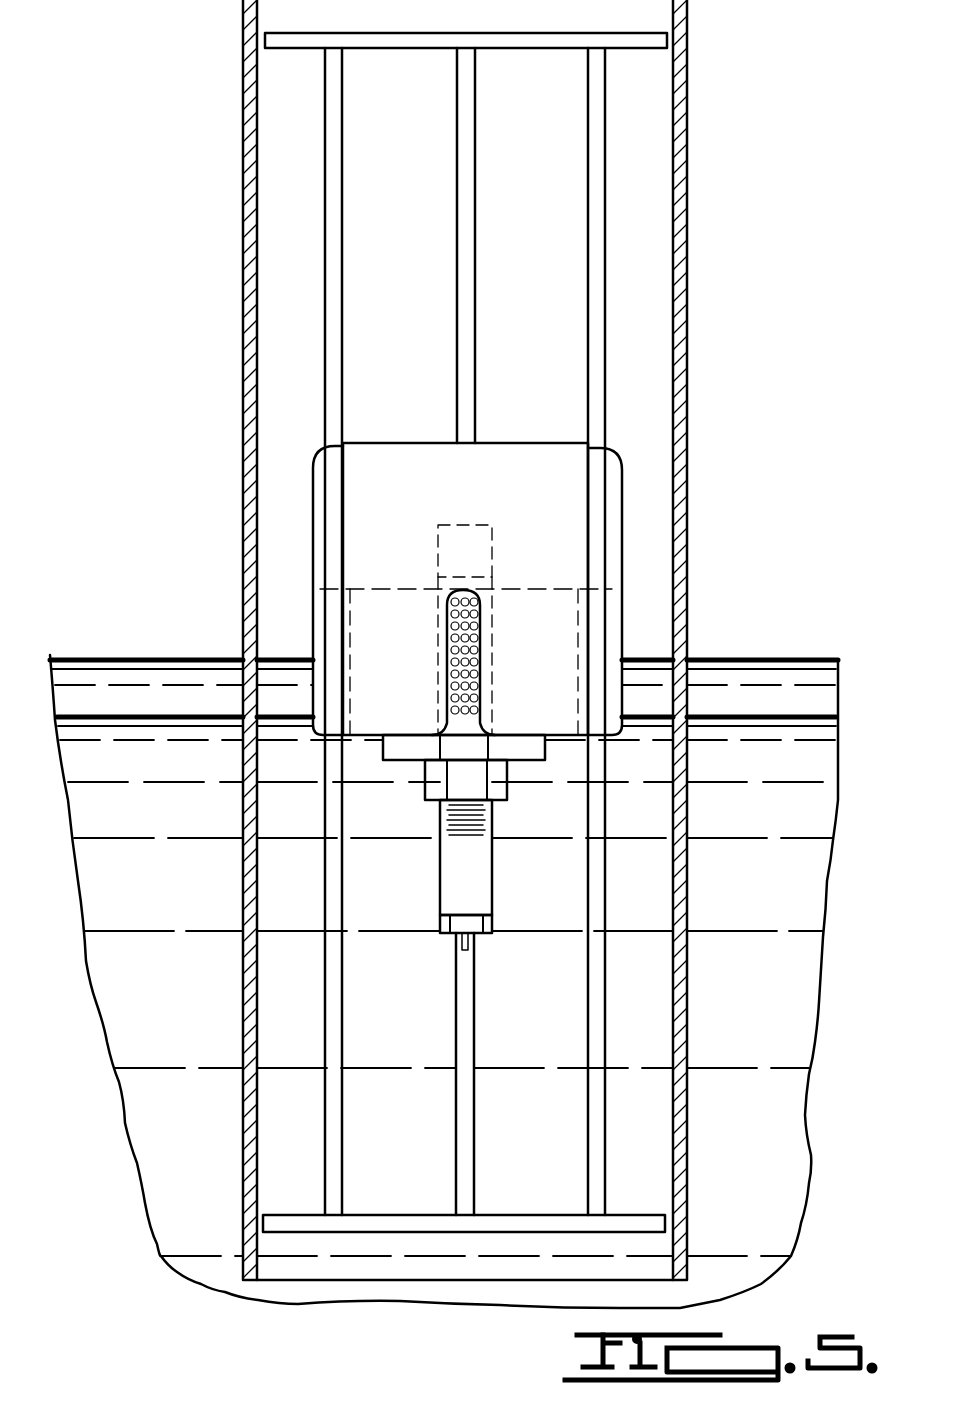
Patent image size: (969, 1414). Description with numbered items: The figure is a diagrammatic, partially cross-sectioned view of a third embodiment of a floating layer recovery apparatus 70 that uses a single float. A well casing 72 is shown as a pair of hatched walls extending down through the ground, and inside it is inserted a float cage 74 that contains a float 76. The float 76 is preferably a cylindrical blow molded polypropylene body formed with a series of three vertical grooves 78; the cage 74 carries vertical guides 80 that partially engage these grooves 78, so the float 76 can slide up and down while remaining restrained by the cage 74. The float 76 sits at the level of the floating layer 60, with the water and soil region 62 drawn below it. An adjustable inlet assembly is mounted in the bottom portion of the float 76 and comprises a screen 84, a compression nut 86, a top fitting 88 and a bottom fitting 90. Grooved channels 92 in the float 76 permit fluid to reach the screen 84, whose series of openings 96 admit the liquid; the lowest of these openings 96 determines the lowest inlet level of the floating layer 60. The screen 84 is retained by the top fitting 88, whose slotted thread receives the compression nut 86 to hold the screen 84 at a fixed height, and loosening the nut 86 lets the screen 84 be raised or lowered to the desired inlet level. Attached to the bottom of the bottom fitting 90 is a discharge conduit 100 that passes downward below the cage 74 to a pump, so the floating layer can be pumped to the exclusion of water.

The floating layer 60 is at (752, 694).
The soil region 62 is at (801, 876).
The floating layer recovery apparatus 70 is at (775, 160).
The well casing 72 is at (690, 295).
The float cage 74 is at (632, 33).
The float 76 is at (525, 443).
The vertical grooves 78 is at (343, 527).
The vertical guides 80 is at (330, 187).
The screen 84 is at (440, 900).
The compression nut 86 is at (432, 788).
The top fitting 88 is at (396, 745).
The bottom fitting 90 is at (492, 925).
The grooved channels 92 is at (481, 660).
The openings 96 is at (447, 614).
The discharge conduit 100 is at (466, 1112).